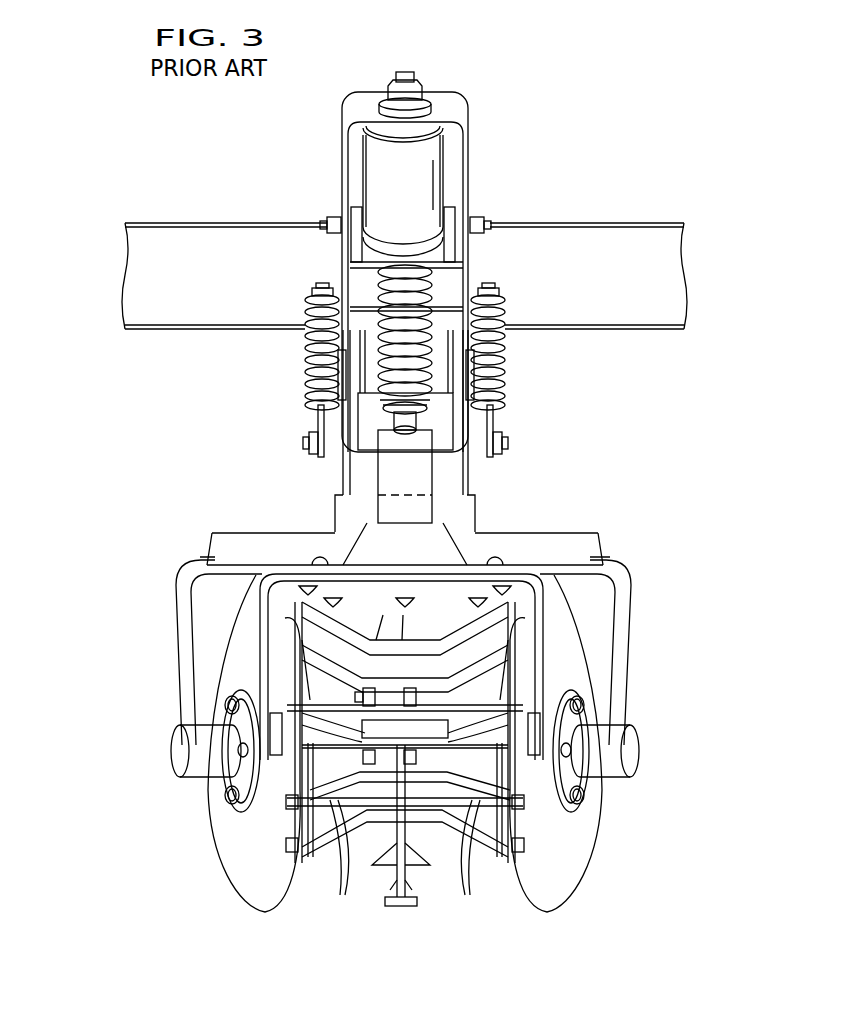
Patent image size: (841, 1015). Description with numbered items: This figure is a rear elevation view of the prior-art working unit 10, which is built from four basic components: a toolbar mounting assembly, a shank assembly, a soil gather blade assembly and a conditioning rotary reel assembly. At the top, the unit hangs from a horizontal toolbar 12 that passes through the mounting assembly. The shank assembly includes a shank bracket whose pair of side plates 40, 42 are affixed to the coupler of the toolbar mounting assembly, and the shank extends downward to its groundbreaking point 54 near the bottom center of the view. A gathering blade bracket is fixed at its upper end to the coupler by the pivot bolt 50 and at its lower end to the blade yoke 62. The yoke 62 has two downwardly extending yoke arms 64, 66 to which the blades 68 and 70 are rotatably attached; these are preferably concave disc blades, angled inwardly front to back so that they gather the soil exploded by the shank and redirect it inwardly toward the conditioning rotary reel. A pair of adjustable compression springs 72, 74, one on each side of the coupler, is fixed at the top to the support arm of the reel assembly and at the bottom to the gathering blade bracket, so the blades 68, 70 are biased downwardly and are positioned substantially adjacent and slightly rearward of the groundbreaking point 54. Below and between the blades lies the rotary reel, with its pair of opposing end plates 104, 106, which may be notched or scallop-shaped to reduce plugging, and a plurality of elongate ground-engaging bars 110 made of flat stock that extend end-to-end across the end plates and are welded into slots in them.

The working unit 10 is at (112, 384).
The toolbar 12 is at (672, 256).
The side plate 40 is at (318, 368).
The side plate 42 is at (502, 375).
The pivot bolt 50 is at (500, 438).
The groundbreaking point 54 is at (410, 890).
The blade yoke 62 is at (626, 533).
The yoke arm 64 is at (190, 655).
The yoke arm 66 is at (625, 645).
The blade 68 is at (252, 880).
The blade 70 is at (560, 877).
The adjustable compression spring 72 is at (310, 370).
The adjustable compression spring 74 is at (505, 342).
The end plate 104 is at (290, 822).
The end plate 106 is at (520, 820).
The ground-engaging bar 110 is at (317, 790).